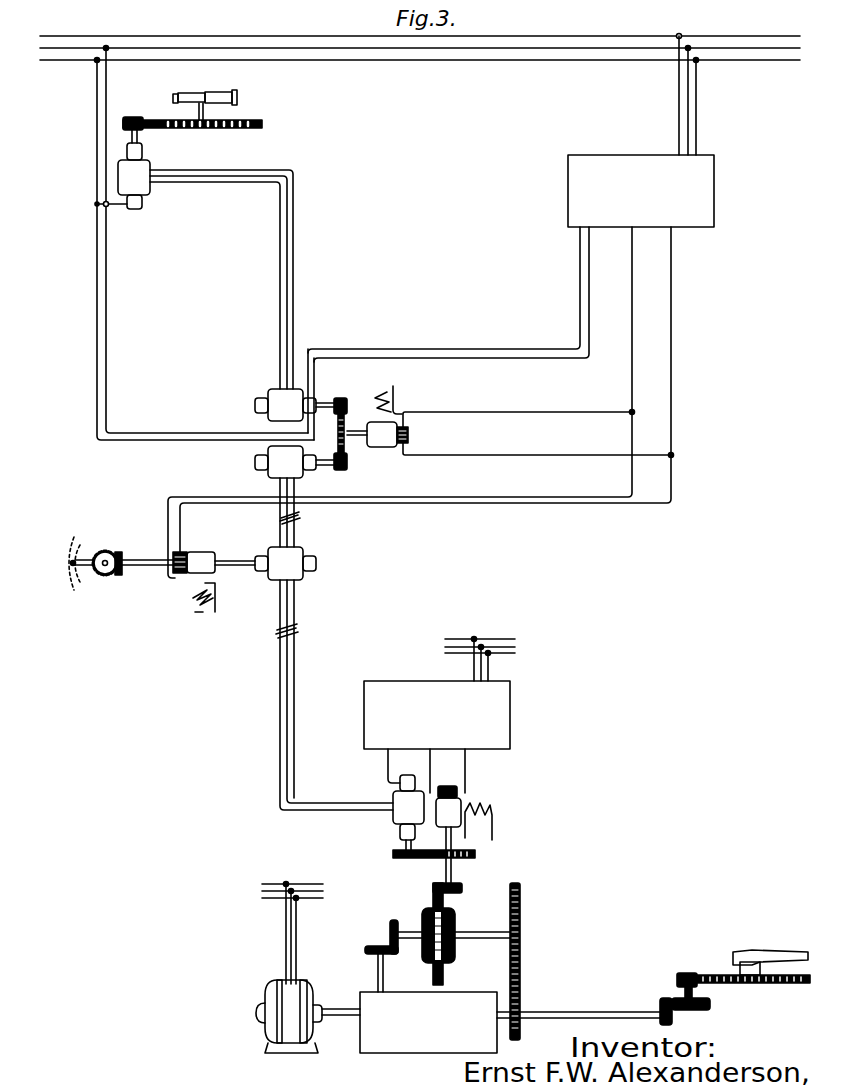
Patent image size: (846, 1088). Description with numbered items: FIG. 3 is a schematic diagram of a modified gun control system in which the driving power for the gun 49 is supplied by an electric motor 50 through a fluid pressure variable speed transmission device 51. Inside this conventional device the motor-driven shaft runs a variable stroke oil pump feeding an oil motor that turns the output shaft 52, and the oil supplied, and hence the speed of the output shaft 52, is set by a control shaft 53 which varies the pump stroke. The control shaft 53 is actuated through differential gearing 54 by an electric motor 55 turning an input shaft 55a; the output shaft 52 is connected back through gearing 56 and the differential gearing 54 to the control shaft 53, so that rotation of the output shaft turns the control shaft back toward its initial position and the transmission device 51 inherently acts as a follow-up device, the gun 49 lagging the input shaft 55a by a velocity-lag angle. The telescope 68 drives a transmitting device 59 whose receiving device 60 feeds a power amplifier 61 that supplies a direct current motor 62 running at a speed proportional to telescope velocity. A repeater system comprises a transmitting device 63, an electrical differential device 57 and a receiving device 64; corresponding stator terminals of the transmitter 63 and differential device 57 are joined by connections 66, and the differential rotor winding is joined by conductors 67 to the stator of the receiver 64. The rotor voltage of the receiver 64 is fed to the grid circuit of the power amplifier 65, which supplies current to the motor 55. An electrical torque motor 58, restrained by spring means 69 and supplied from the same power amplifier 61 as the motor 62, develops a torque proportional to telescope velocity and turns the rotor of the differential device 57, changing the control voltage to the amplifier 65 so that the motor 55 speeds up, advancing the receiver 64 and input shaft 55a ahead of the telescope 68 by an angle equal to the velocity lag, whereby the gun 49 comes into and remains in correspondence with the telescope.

The gun 49 is at (766, 952).
The electric motor 50 is at (268, 998).
The fluid pressure variable speed transmission device 51 is at (428, 1022).
The output shaft 52 is at (603, 999).
The control shaft 53 is at (383, 971).
The differential gearing 54 is at (428, 908).
The electric motor 55 is at (464, 834).
The input shaft 55a is at (455, 866).
The gearing 56 is at (522, 958).
The electrical differential device 57 is at (285, 563).
The electrical torque motor 58 is at (214, 582).
The transmitting device 59 is at (194, 258).
The receiving device 60 is at (294, 405).
The power amplifier 61 is at (641, 131).
The direct current motor 62 is at (504, 426).
The transmitting device 63 is at (294, 496).
The receiving device 64 is at (408, 813).
The power amplifier 65 is at (439, 715).
The connections 66 is at (299, 518).
The conductors 67 is at (334, 695).
The telescope 68 is at (218, 93).
The spring means 69 is at (110, 563).